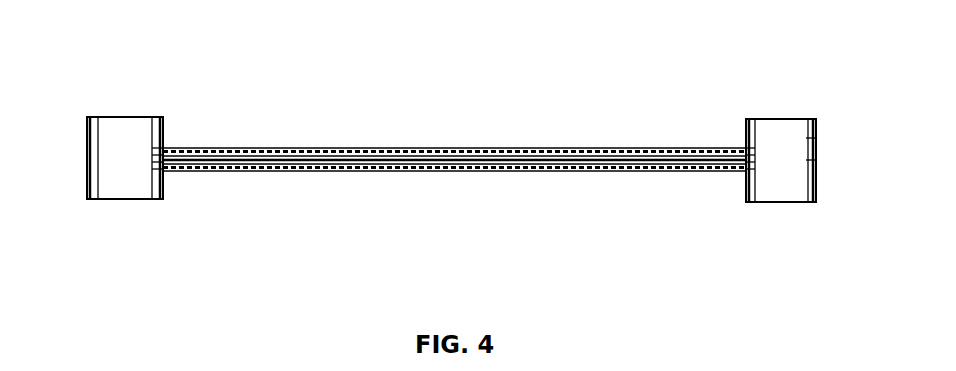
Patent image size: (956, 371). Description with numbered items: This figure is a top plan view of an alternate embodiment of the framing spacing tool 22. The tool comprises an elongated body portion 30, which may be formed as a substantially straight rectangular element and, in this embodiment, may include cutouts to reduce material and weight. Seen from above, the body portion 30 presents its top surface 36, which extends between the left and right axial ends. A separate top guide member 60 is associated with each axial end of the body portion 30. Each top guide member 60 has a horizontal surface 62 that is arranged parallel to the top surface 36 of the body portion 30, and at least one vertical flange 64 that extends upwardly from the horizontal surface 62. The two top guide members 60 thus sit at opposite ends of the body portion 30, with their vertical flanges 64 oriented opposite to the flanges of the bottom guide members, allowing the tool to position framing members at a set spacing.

The framing spacing tool 22 is at (468, 126).
The body portion 30 is at (568, 173).
The top surface 36 is at (342, 149).
The top guide member 60 is at (124, 200).
The horizontal surface 62 is at (127, 138).
The vertical flange 64 is at (88, 137).